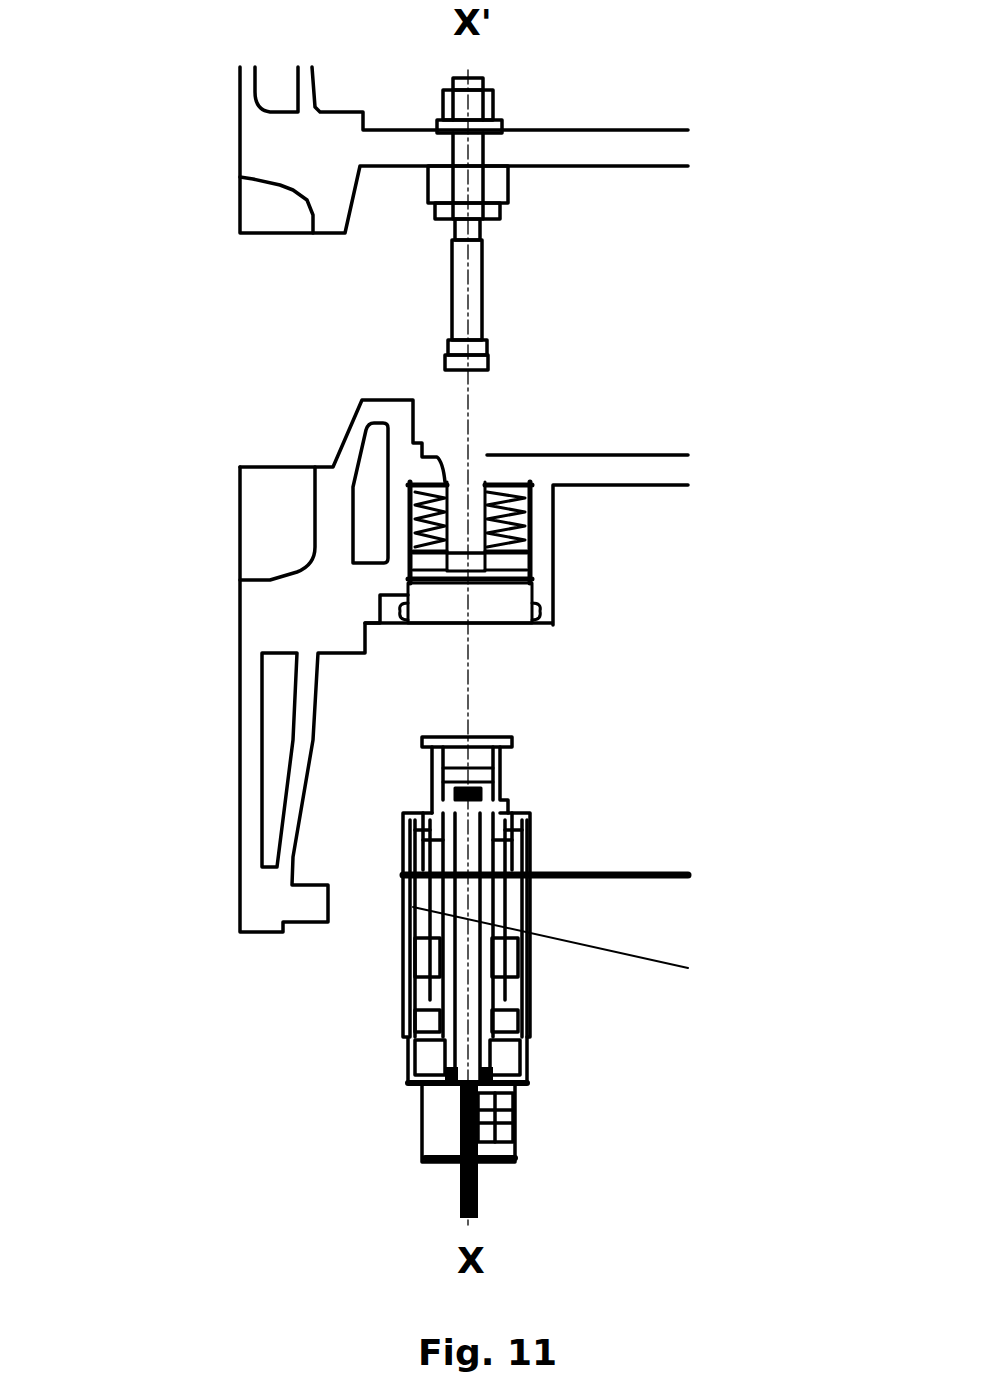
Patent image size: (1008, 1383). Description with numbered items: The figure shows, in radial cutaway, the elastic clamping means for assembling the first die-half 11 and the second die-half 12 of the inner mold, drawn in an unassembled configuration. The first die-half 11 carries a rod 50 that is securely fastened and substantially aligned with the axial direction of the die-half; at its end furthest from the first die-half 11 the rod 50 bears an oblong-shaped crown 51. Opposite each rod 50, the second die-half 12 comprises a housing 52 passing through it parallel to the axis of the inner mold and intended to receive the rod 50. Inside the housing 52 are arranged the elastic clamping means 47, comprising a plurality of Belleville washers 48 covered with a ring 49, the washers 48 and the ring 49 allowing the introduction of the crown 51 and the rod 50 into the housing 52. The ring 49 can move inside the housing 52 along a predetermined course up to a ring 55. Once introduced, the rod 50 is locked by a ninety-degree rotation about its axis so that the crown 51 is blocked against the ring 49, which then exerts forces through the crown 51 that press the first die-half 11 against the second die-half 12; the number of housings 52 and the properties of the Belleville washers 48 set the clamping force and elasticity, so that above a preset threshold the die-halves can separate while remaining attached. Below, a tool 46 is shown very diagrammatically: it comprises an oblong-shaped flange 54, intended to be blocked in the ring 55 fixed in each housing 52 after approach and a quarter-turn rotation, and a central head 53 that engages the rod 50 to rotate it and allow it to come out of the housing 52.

The first die-half 11 is at (293, 138).
The second die-half 12 is at (315, 612).
The tool 46 is at (422, 782).
The elastic clamping means 47 is at (528, 505).
The Belleville washers 48 is at (535, 527).
The ring 49 is at (535, 563).
The rod 50 is at (472, 295).
The oblong-shaped crown 51 is at (487, 363).
The housing 52 is at (467, 583).
The central head 53 is at (477, 735).
The oblong-shaped flange 54 is at (512, 747).
The ring 55 is at (540, 615).